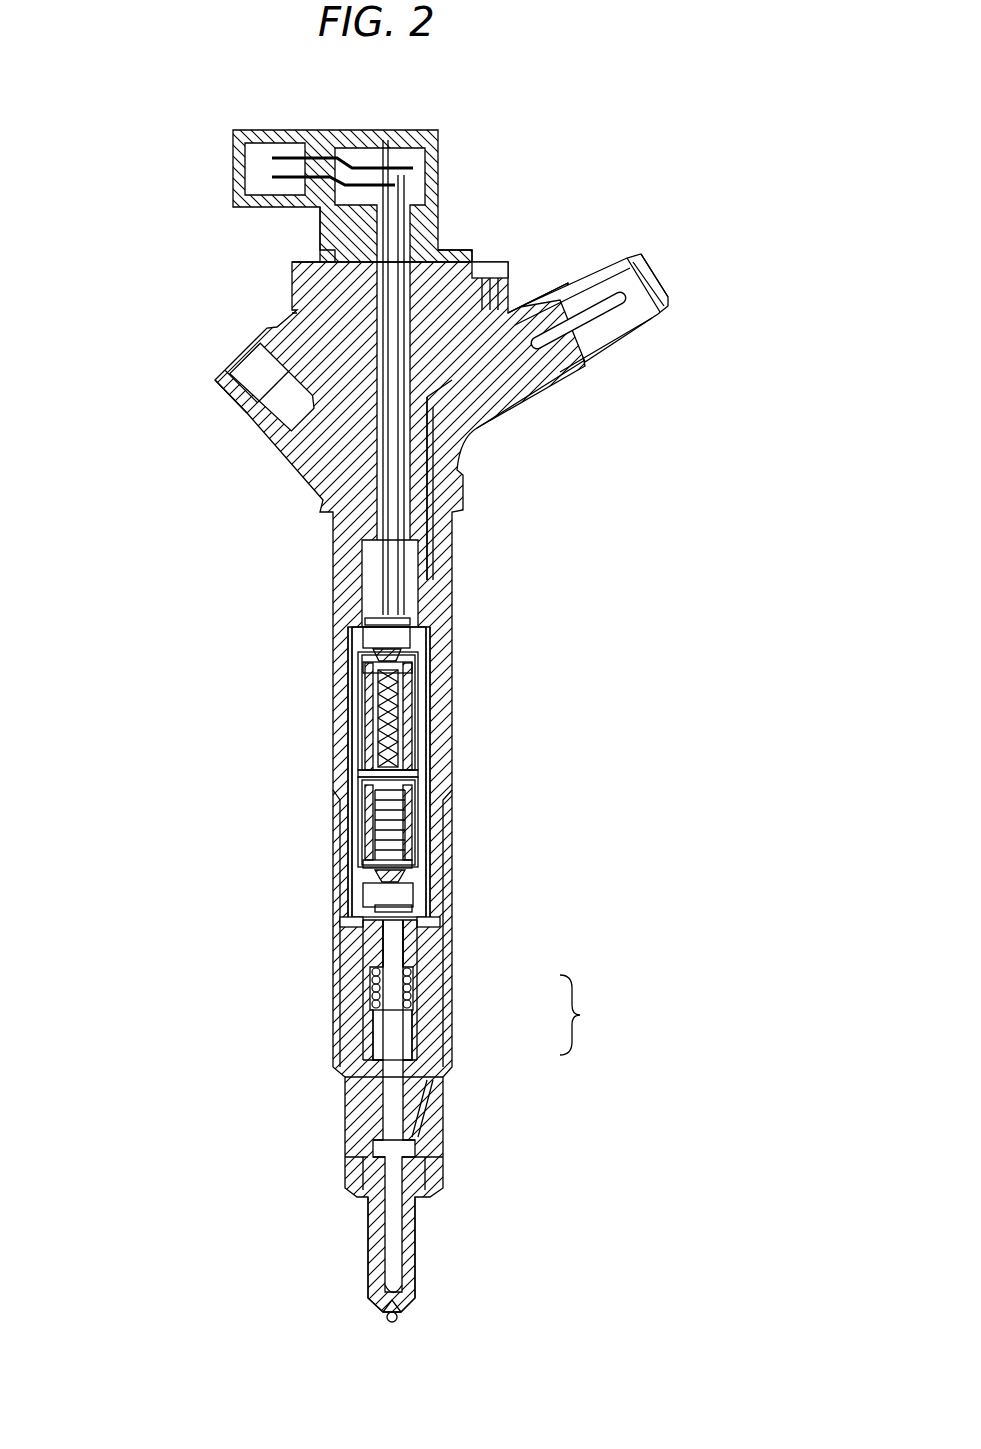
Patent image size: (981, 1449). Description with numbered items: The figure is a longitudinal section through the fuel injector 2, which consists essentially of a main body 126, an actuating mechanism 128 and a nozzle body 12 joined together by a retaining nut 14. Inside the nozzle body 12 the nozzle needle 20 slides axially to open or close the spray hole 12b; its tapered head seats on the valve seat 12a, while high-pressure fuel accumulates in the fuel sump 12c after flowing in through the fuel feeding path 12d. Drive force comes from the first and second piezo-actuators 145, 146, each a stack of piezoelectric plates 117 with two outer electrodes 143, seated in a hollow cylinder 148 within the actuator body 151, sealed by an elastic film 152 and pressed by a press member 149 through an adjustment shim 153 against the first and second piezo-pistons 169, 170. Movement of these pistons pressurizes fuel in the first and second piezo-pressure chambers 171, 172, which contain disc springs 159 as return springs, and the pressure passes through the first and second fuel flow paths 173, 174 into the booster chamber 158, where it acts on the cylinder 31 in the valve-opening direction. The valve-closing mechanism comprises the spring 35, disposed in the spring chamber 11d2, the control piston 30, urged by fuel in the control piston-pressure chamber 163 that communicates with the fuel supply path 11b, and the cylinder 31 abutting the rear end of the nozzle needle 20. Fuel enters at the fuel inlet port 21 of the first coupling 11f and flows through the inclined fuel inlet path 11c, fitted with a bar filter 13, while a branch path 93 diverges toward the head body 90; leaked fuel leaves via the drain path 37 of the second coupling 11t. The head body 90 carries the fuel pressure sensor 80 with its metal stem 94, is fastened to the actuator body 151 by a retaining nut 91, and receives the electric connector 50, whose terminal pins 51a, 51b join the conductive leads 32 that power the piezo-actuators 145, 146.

The fuel injector 2 is at (655, 520).
The fuel supply path 11b is at (430, 770).
The fuel inlet path 11c is at (455, 415).
The spring chamber 11d2 is at (375, 982).
The first coupling 11f is at (640, 330).
The second coupling 11t is at (244, 402).
The nozzle body 12 is at (366, 1178).
The valve seat 12a is at (385, 1295).
The spray hole 12b is at (388, 1320).
The fuel sump 12c is at (412, 1145).
The fuel feeding path 12d is at (430, 1095).
The bar filter 13 is at (600, 302).
The retaining nut 14 is at (345, 1152).
The nozzle needle 20 is at (412, 1218).
The fuel inlet port 21 is at (650, 290).
The control piston 30 is at (586, 1015).
The cylinder 31 is at (402, 1030).
The conductive leads 32 is at (392, 555).
The spring 35 is at (412, 978).
The drain path 37 is at (252, 356).
The electric connector 50 is at (378, 145).
The terminal pin 51a is at (272, 158).
The terminal pin 51b is at (272, 178).
The fuel pressure sensor 80 is at (465, 250).
The head body 90 is at (302, 250).
The retaining nut 91 is at (506, 270).
The branch path 93 is at (527, 332).
The metal stem 94 is at (476, 270).
The piezoelectric plates 117 is at (378, 745).
The main body 126 is at (304, 972).
The actuating mechanism 128 is at (270, 686).
The outer electrodes 143 is at (370, 690).
The first piezo-actuator 145 is at (375, 830).
The second piezo-actuator 146 is at (386, 722).
The hollow cylinder 148 is at (416, 700).
The press member 149 is at (365, 667).
The actuator body 151 is at (445, 730).
The elastic film 152 is at (360, 636).
The adjustment shim 153 is at (398, 652).
The booster chamber 158 is at (370, 1050).
The disc springs 159 is at (362, 606).
The control piston-pressure chamber 163 is at (398, 924).
The first piezo-piston 169 is at (375, 895).
The second piezo-piston 170 is at (408, 636).
The first piezo-pressure chamber 171 is at (405, 906).
The second piezo-pressure chamber 172 is at (410, 620).
The first fuel flow path 173 is at (350, 924).
The second fuel flow path 174 is at (356, 774).